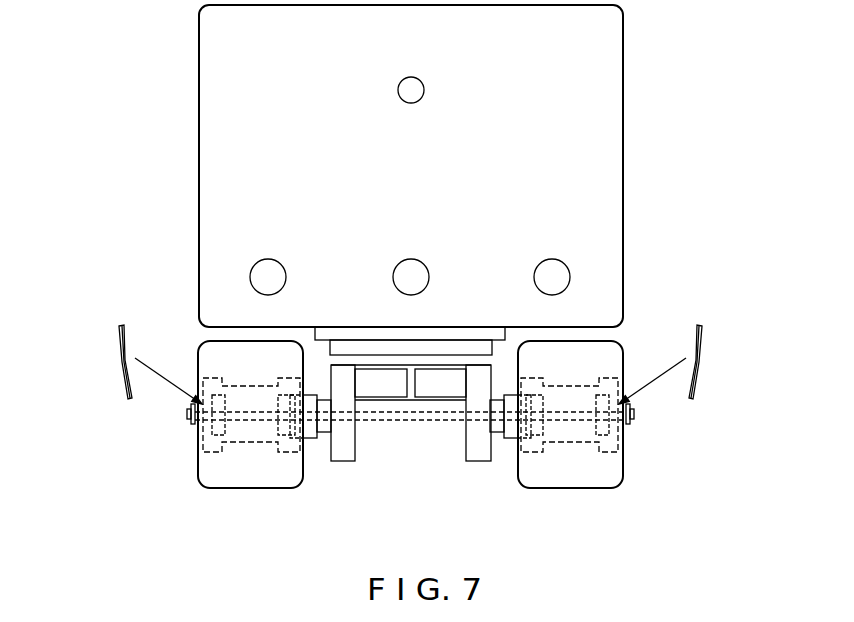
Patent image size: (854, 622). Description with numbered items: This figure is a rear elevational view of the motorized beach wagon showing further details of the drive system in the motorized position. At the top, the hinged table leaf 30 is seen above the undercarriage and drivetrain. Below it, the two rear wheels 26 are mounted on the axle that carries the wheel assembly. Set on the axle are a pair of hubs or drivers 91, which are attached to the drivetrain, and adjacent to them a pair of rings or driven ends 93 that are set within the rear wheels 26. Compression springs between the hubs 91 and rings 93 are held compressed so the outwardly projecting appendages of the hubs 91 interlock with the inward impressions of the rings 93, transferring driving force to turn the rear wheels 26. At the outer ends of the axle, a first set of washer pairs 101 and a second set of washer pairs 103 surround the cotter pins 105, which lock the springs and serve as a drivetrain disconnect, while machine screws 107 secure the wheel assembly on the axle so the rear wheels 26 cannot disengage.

The table leaf 30 is at (592, 165).
The rear wheels 26 is at (588, 486).
The hubs or drivers 91 is at (307, 440).
The rings or driven ends 93 is at (296, 441).
The first set of washer pairs 101 is at (205, 433).
The second set of washer pairs 103 is at (191, 410).
The cotter pins 105 is at (118, 350).
The machine screws 107 is at (187, 415).